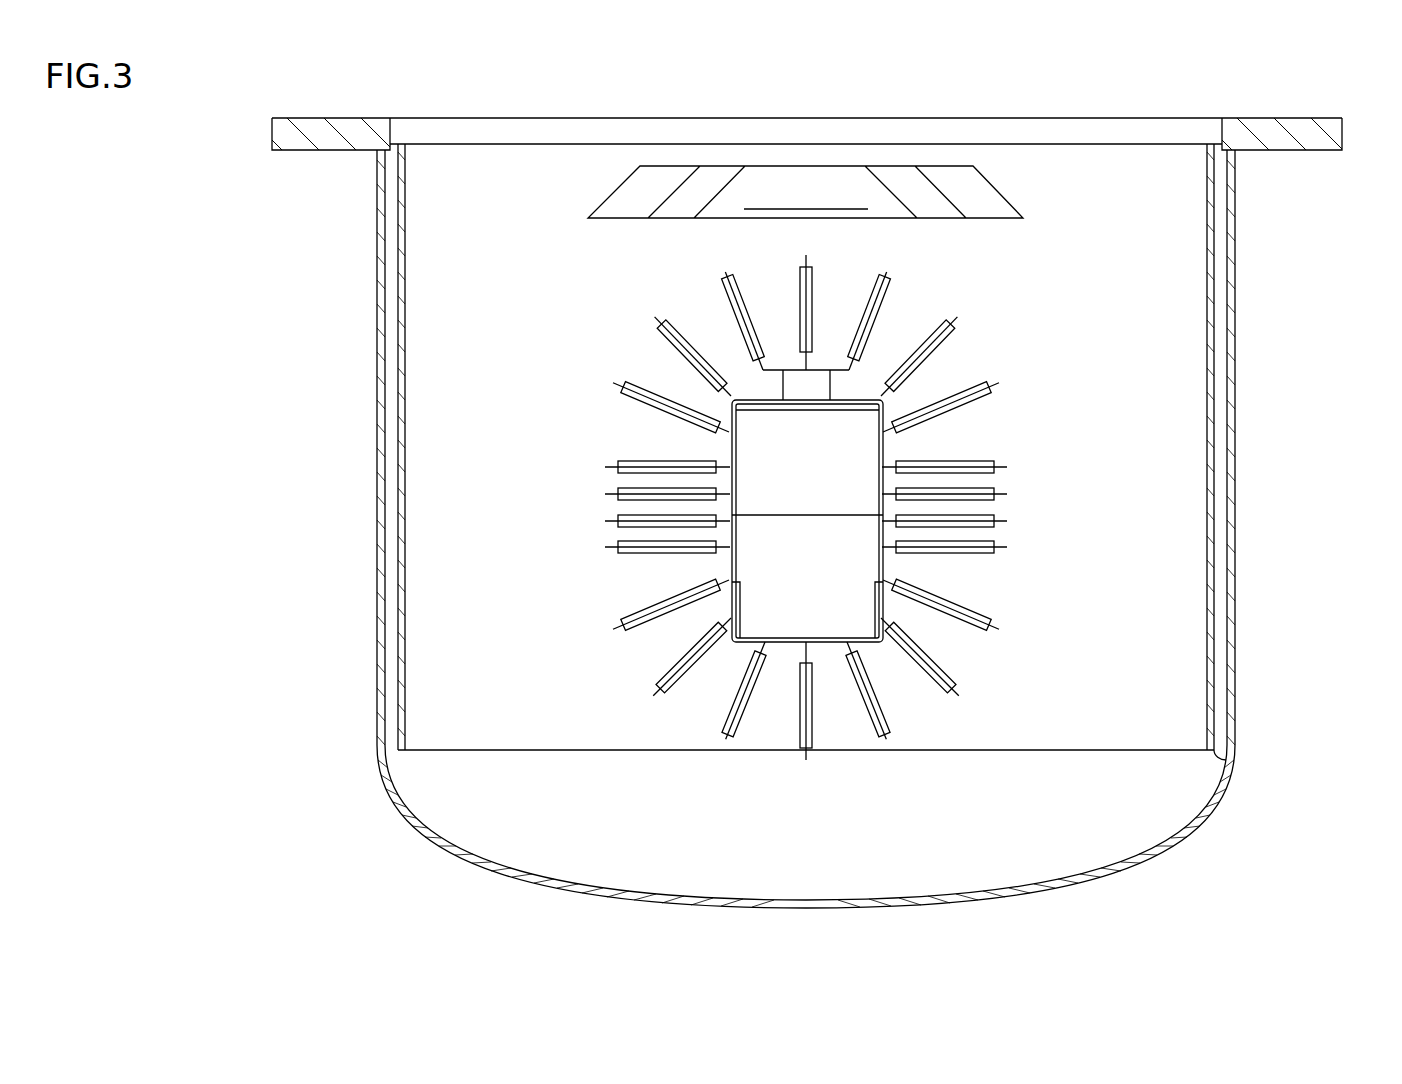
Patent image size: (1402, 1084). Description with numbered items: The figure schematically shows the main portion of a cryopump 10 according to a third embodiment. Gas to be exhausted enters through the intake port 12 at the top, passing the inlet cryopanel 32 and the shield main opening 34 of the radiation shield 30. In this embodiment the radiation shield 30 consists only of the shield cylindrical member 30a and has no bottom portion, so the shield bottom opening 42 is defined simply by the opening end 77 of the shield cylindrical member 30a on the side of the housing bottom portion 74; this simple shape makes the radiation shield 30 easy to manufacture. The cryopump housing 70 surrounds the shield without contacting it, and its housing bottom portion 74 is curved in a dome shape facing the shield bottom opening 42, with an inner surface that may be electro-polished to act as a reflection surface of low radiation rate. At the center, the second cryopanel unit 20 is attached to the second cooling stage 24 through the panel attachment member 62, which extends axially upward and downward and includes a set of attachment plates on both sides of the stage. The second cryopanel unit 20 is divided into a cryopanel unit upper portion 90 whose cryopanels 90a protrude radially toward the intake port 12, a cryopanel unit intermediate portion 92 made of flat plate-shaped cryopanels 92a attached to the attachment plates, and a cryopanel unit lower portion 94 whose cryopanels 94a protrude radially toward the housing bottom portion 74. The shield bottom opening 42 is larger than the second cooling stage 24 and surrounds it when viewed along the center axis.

The cryopump 10 is at (792, 941).
The intake port 12 is at (660, 116).
The second cryopanel unit 20 is at (863, 256).
The second cooling stage 24 is at (764, 515).
The radiation shield 30 is at (883, 447).
The shield cylindrical member 30a is at (1214, 382).
The inlet cryopanel 32 is at (990, 183).
The shield main opening 34 is at (604, 140).
The shield bottom opening 42 is at (579, 756).
The panel attachment member 62 is at (730, 440).
The cryopump housing 70 is at (1235, 215).
The housing bottom portion 74 is at (1127, 878).
The opening end 77 is at (1218, 757).
The cryopanel unit upper portion 90 is at (845, 343).
The cryopanel 90a is at (888, 274).
The cryopanel unit intermediate portion 92 is at (842, 499).
The flat plate-shaped cryopanel 92a is at (944, 449).
The cryopanel unit lower portion 94 is at (845, 667).
The cryopanel 94a is at (880, 700).